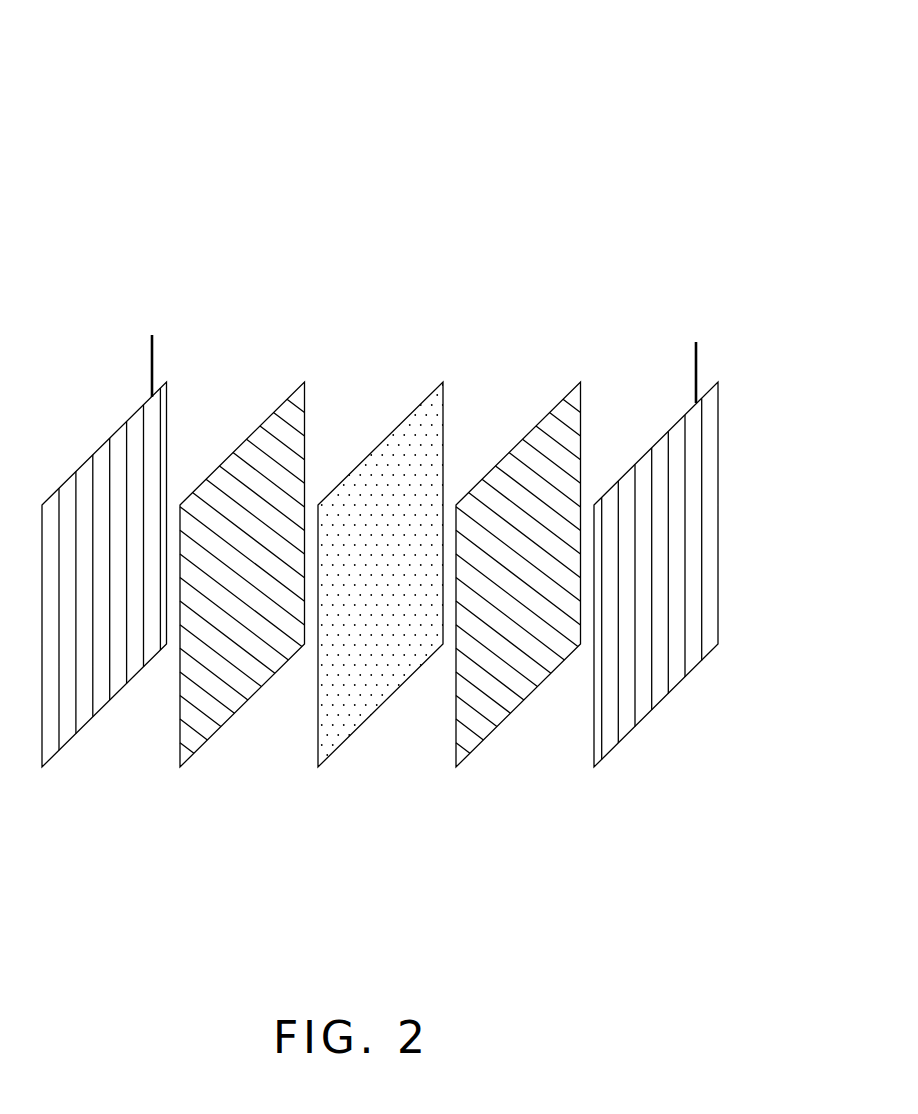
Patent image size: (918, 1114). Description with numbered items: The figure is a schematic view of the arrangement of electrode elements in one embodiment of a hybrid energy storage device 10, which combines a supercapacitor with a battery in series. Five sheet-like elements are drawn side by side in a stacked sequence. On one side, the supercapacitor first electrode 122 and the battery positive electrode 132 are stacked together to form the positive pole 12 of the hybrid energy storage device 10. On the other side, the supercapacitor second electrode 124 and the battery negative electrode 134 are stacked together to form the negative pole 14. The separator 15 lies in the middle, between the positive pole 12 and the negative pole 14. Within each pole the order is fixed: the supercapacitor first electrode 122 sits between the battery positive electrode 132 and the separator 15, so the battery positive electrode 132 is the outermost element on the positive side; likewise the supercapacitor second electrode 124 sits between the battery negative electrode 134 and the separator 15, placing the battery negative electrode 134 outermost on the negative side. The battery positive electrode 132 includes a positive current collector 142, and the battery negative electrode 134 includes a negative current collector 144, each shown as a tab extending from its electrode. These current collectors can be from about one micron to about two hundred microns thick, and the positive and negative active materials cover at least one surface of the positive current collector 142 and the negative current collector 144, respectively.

The hybrid energy storage device 10 is at (390, 73).
The positive pole 12 is at (437, 334).
The negative pole 14 is at (163, 313).
The separator 15 is at (415, 408).
The supercapacitor first electrode 122 is at (562, 397).
The supercapacitor second electrode 124 is at (295, 382).
The battery positive electrode 132 is at (674, 528).
The battery negative electrode 134 is at (132, 540).
The positive current collector 142 is at (697, 355).
The negative current collector 144 is at (148, 363).